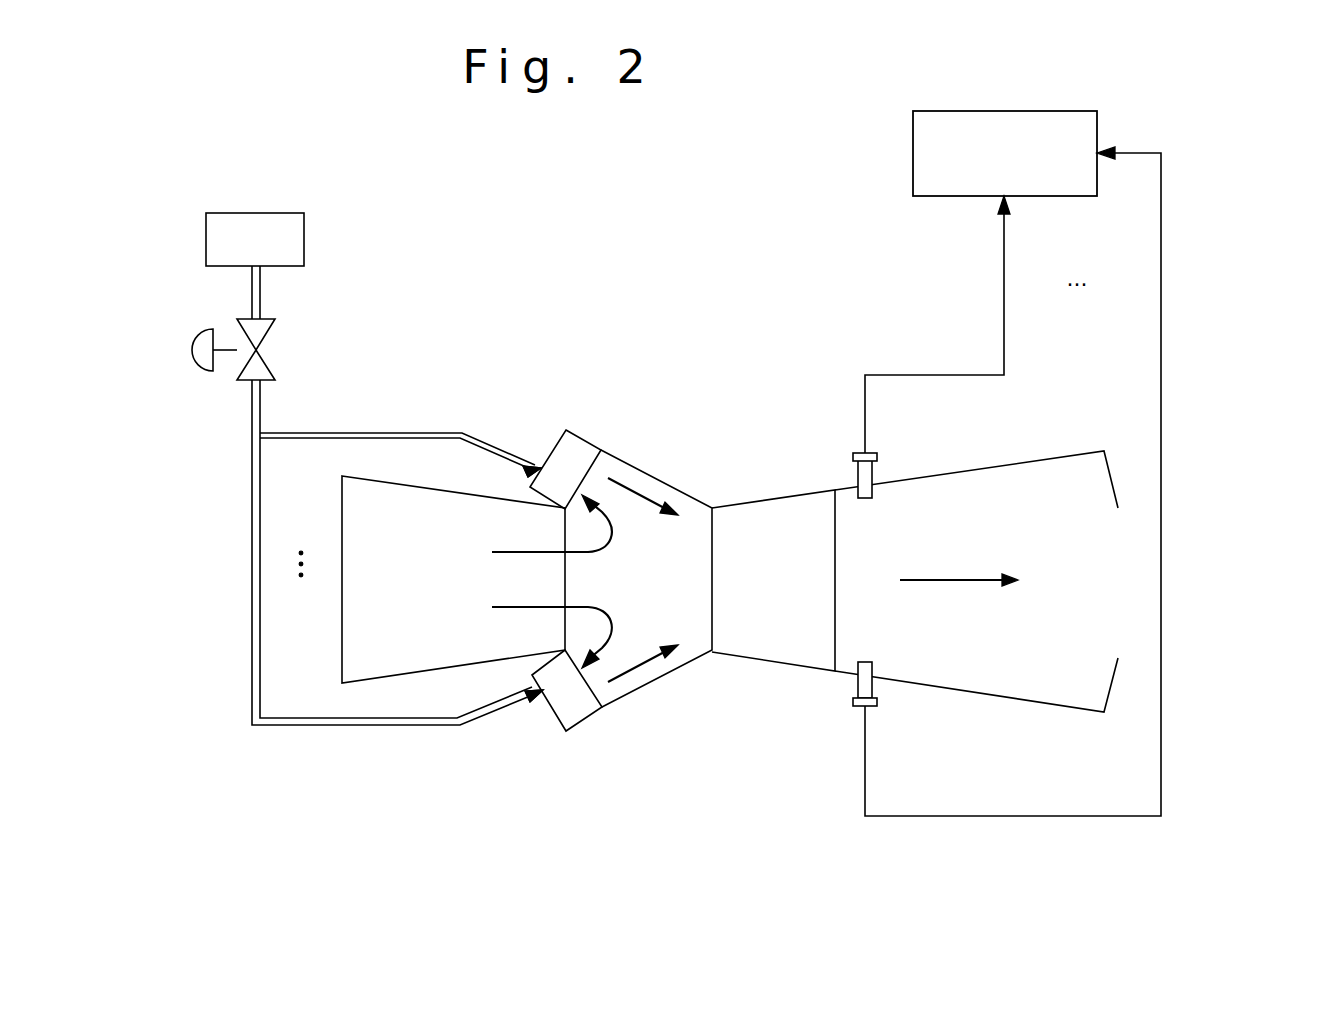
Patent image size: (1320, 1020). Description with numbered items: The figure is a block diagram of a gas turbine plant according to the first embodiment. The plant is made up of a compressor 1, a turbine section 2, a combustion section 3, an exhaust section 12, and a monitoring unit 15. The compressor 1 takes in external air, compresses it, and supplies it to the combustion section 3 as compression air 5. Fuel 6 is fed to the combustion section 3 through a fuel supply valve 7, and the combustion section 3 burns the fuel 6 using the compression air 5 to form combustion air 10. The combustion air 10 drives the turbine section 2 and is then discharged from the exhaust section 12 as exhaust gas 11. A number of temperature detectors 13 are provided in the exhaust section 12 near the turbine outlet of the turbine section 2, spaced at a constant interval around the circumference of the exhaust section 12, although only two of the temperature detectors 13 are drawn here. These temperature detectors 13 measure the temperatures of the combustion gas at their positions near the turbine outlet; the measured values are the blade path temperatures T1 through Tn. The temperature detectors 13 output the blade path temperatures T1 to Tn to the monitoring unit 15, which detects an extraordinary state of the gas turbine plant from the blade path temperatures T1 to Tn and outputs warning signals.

The compressor 1 is at (392, 676).
The turbine section 2 is at (778, 662).
The combustion section 3 is at (598, 446).
The compression air 5 is at (497, 553).
The fuel 6 is at (260, 212).
The fuel supply valve 7 is at (265, 362).
The combustion air 10 is at (660, 482).
The exhaust gas 11 is at (955, 577).
The exhaust section 12 is at (1035, 459).
The temperature detector 13 is at (857, 465).
The monitoring unit 15 is at (912, 142).
The blade path temperature T1 is at (1003, 290).
The blade path temperature Tn is at (1162, 290).